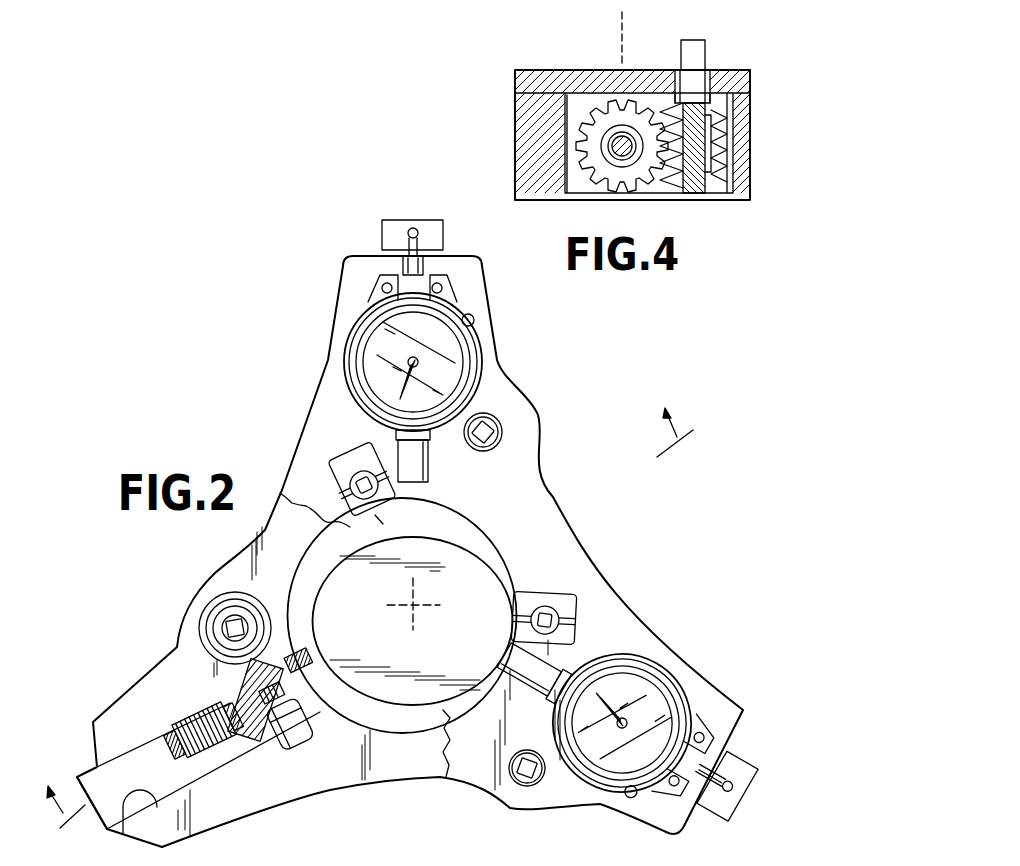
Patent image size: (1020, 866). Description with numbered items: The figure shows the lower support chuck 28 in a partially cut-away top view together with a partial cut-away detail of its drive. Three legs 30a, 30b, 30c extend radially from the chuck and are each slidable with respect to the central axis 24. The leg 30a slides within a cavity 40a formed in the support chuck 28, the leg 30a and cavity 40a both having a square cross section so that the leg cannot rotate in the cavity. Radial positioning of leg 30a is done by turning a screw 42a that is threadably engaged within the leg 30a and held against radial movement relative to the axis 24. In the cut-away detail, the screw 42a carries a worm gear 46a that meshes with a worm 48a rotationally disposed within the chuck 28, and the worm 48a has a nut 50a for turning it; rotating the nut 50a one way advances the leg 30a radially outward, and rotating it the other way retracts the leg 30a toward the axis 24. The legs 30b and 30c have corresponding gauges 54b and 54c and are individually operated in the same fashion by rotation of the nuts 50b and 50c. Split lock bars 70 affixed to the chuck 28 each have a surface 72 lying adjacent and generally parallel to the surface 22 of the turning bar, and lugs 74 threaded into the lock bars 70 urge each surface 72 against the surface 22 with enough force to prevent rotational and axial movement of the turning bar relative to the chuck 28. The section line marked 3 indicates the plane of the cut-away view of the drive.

In FIG. 2, the surface of the turning bar 22 is at (318, 548).
In FIG. 4, the axis 24 is at (620, 50).
In FIG. 2, the axis 24 is at (420, 606).
In FIG. 4, the lower support chuck 28 is at (750, 152).
In FIG. 2, the lower support chuck 28 is at (607, 582).
In FIG. 2, the leg 30a is at (86, 774).
In FIG. 2, the leg 30b is at (382, 236).
In FIG. 2, the leg 30c is at (758, 766).
In FIG. 2, the cavity 40a is at (123, 834).
In FIG. 2, the screw 42a is at (192, 704).
In FIG. 4, the worm gear 46a is at (638, 196).
In FIG. 2, the worm gear 46a is at (318, 740).
In FIG. 4, the worm 48a is at (742, 196).
In FIG. 2, the worm 48a is at (204, 636).
In FIG. 4, the nut 50a is at (706, 52).
In FIG. 2, the nut 50a is at (236, 619).
In FIG. 2, the nut 50b is at (502, 432).
In FIG. 2, the nut 50c is at (540, 772).
In FIG. 2, the gauge 54b is at (372, 358).
In FIG. 2, the gauge 54c is at (657, 698).
In FIG. 2, the split lock bar 70 is at (353, 443).
In FIG. 2, the surface of the lock bar 72 is at (377, 517).
In FIG. 2, the lug 74 is at (351, 480).
In FIG. 2, the section line 3- 3 is at (377, 629).